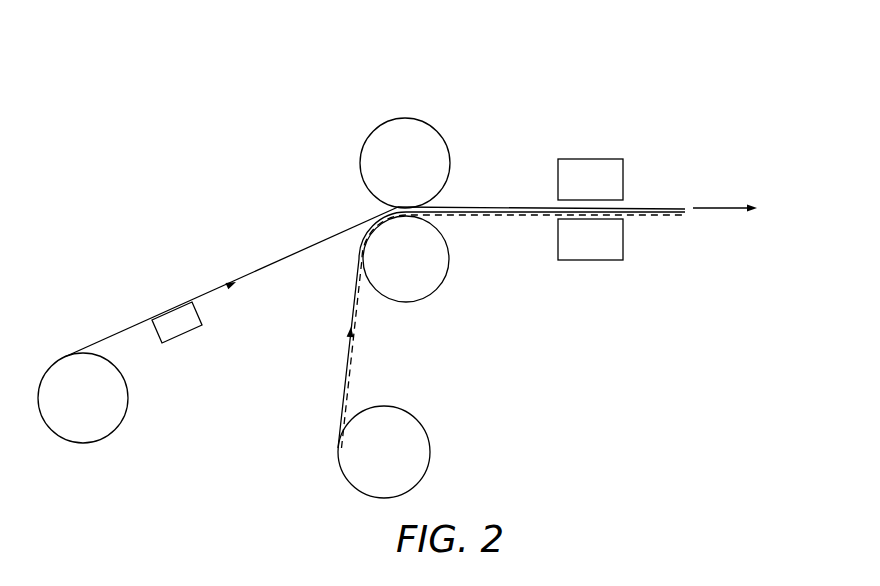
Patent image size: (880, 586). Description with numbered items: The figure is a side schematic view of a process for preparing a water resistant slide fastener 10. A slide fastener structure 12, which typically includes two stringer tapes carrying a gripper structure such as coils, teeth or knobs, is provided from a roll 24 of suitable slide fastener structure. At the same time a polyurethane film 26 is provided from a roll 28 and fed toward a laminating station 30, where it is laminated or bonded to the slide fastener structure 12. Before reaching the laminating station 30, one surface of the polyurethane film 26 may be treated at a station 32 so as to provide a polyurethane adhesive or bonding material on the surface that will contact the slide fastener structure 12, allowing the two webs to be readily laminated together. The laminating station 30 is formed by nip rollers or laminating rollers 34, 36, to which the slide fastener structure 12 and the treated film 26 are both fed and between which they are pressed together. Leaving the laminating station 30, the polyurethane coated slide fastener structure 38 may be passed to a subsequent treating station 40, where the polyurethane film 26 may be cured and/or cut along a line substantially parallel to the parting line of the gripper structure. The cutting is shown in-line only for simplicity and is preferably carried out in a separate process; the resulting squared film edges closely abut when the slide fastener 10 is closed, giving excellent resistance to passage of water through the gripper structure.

The slide fastener 10 is at (653, 195).
The slide fastener structure 12 is at (350, 383).
The roll 24 is at (418, 455).
The polyurethane film 26 is at (123, 332).
The roll 28 is at (115, 413).
The laminating station 30 is at (451, 94).
The station 32 is at (180, 328).
The nip roller 34 is at (380, 143).
The nip roller 36 is at (433, 278).
The polyurethane coated slide fastener structure 38 is at (482, 207).
The treating station 40 is at (595, 159).